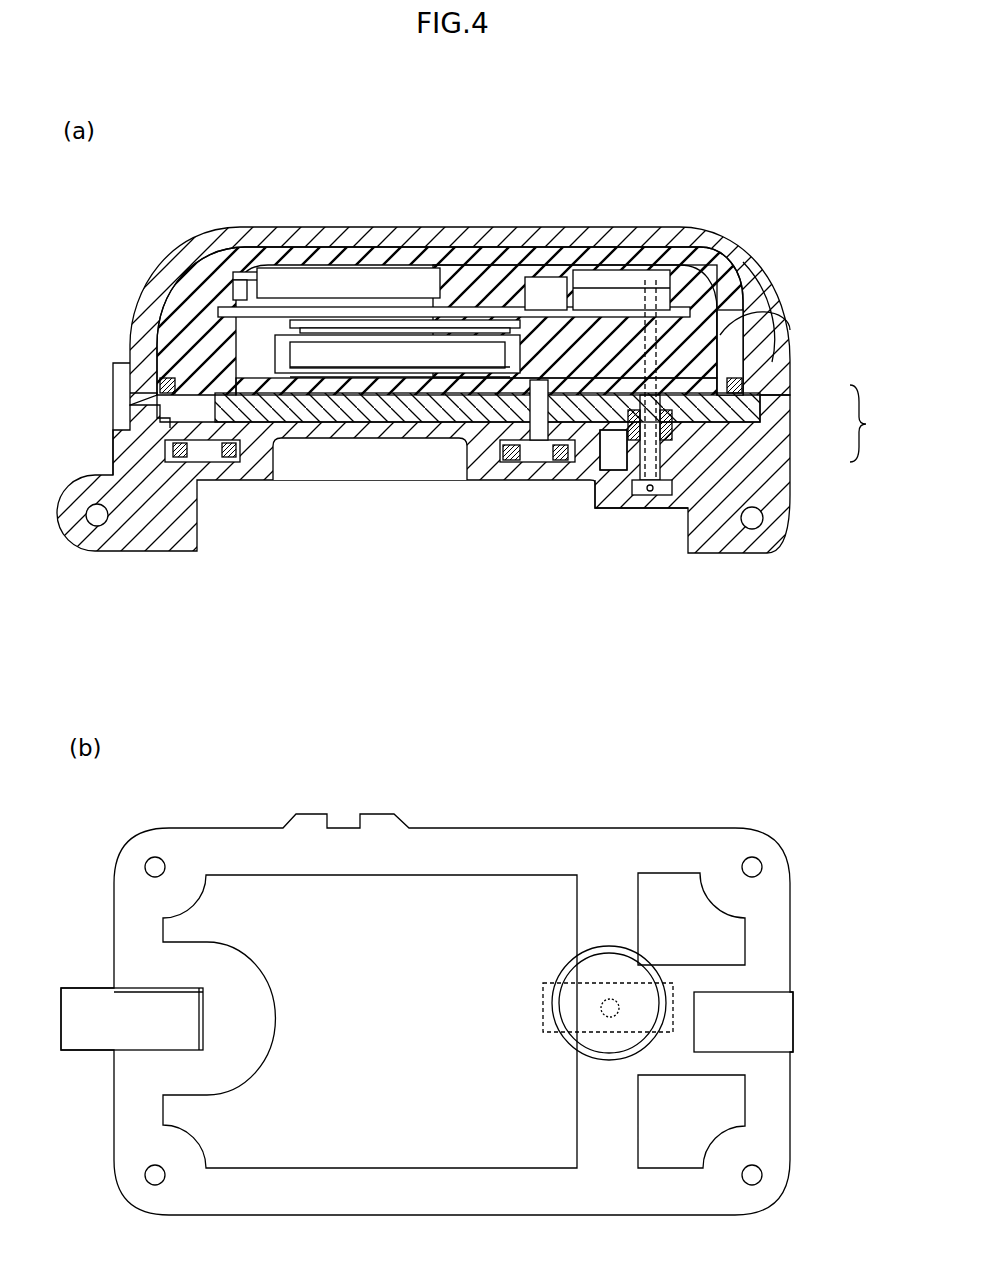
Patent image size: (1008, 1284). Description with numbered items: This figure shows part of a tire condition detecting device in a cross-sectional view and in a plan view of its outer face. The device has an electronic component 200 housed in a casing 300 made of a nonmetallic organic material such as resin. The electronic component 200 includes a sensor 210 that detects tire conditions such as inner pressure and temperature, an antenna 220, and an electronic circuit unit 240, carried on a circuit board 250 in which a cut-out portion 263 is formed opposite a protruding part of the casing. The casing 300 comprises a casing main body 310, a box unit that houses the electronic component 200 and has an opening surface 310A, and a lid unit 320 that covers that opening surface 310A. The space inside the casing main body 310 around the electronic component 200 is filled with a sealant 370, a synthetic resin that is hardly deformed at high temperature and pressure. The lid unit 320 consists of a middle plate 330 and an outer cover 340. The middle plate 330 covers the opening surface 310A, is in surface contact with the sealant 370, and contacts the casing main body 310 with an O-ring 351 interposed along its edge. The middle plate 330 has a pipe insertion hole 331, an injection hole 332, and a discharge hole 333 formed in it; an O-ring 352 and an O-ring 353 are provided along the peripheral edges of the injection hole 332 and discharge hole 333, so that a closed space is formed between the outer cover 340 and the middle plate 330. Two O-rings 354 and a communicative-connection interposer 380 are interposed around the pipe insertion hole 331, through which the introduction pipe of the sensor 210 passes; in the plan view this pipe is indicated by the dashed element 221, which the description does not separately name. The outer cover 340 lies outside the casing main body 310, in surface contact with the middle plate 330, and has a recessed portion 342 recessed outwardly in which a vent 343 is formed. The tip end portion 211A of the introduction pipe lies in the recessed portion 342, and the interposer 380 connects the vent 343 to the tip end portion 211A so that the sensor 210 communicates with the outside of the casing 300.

The casing 300 is at (739, 200).
The sealant 370 is at (206, 292).
The cut-out portion 263 is at (247, 263).
The circuit board 250 is at (335, 302).
The antenna 220 is at (546, 302).
The sensor 210 is at (603, 284).
The casing main body 310 is at (714, 249).
The screw 221 is at (725, 287).
The pipe insertion hole 331 is at (755, 334).
The O-ring 351 is at (161, 380).
The opening surface 310A is at (143, 405).
The middle plate 330 is at (763, 413).
The outer cover 340 is at (786, 445).
The lid unit 320 is at (875, 423).
The injection hole 332 is at (210, 458).
The electronic component 200 is at (350, 347).
The electronic circuit unit 240 is at (379, 354).
The O-ring 353 is at (513, 465).
The discharge hole 333 is at (533, 465).
The communicative-connection interposer 380 is at (616, 482).
The O-ring 354 is at (638, 427).
The tip end portion 211A is at (658, 489).
The vent 343 is at (660, 495).
The recessed portion 342 is at (755, 530).
The O-ring 352 is at (134, 517).